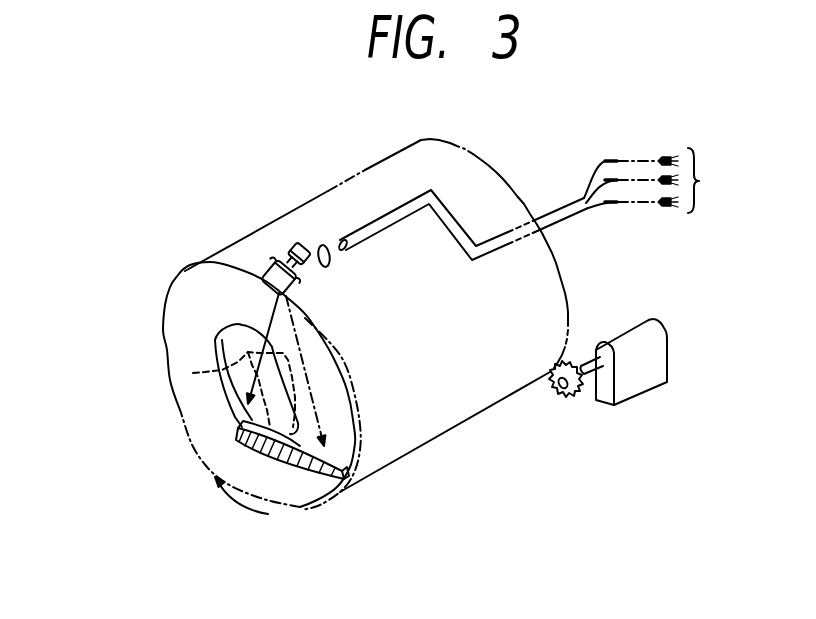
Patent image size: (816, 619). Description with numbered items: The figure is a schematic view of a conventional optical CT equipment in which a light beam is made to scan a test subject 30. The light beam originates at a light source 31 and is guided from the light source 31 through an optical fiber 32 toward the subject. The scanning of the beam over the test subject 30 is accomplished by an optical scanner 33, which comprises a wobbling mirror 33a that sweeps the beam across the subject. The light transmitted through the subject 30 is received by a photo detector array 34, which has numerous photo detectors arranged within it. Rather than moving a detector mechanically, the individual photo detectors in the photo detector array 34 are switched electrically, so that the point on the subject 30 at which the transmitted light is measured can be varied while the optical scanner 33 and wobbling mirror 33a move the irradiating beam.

The test subject 30 is at (187, 380).
The light source 31 is at (656, 180).
The optical fiber 32 is at (420, 190).
The optical scanner 33 is at (290, 245).
The wobbling mirror 33a is at (264, 283).
The photo detector array 34 is at (317, 480).